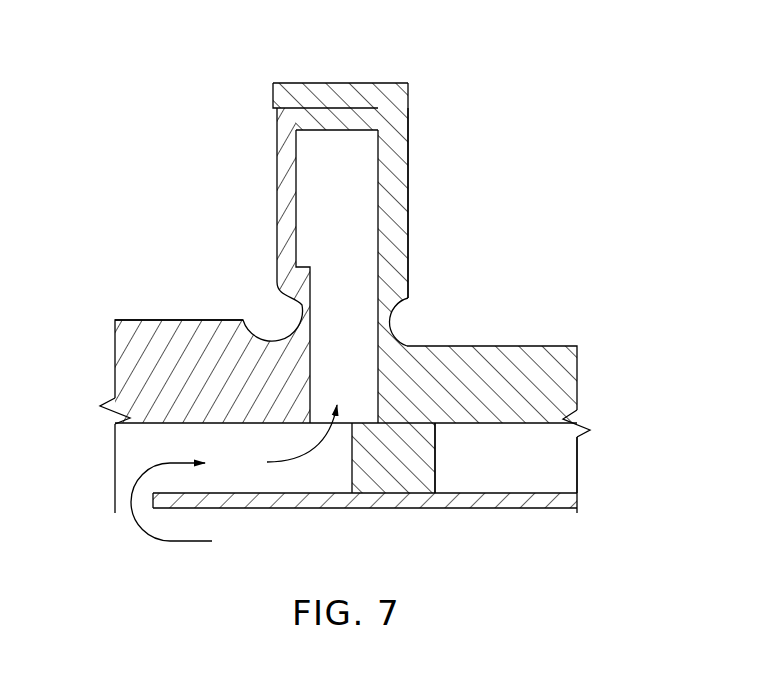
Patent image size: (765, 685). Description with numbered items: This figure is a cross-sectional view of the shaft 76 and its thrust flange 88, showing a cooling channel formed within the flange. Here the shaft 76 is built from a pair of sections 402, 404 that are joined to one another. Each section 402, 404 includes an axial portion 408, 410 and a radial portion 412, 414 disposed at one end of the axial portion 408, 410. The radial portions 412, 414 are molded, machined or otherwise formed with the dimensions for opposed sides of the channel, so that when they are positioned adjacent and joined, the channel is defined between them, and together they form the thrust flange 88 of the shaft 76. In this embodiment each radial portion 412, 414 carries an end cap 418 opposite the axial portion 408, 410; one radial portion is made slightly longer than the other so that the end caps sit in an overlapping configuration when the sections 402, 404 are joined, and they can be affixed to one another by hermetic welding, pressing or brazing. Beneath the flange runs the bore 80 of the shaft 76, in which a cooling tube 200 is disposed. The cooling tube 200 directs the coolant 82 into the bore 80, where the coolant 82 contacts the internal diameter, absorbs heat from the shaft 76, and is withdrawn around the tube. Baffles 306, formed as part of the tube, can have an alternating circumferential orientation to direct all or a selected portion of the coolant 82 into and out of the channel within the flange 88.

The shaft 76 is at (130, 399).
The bore 80 is at (577, 470).
The coolant 82 is at (267, 463).
The thrust flange 88 is at (430, 159).
The cooling tube 200 is at (577, 501).
The baffles 306 is at (394, 508).
The first section 402 is at (129, 437).
The second section 404 is at (540, 334).
The axial portion 408 is at (115, 353).
The axial portion 410 is at (577, 386).
The radial portion 412 is at (277, 242).
The radial portion 414 is at (408, 212).
The end cap 418 is at (328, 86).